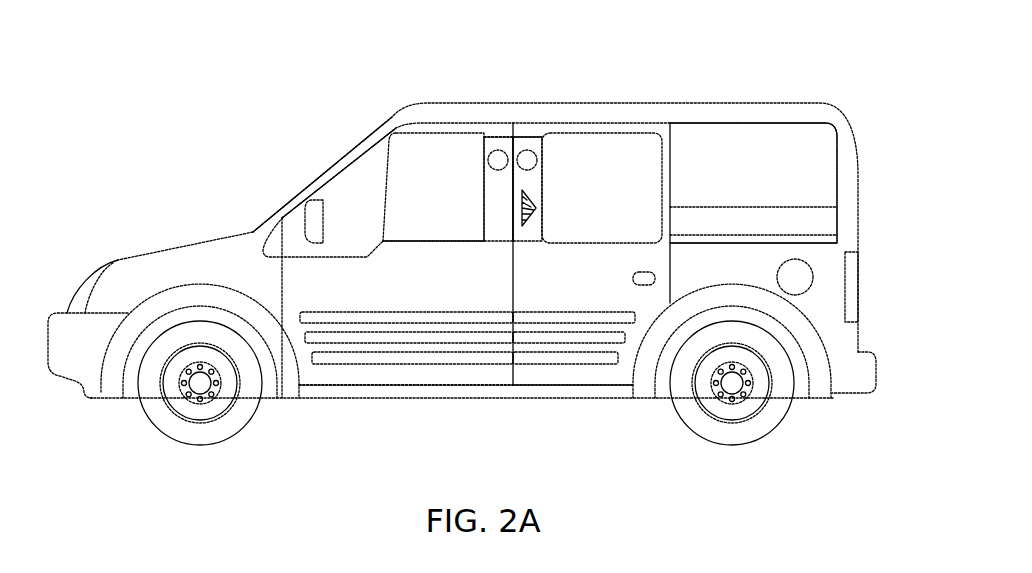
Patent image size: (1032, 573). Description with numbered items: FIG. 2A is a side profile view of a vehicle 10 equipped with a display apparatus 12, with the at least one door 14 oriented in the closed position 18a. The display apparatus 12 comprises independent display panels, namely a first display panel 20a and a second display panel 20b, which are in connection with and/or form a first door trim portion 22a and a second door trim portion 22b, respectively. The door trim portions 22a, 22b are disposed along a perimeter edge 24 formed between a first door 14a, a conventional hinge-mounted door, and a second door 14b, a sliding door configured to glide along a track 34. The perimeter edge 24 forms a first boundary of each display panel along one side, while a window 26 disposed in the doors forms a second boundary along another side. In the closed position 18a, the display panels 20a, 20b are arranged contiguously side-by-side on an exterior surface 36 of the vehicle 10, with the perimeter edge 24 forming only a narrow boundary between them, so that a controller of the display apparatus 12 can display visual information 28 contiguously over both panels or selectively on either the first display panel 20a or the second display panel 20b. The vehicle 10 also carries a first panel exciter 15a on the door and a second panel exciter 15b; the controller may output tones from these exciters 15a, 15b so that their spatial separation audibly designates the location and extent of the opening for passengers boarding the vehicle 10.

The vehicle 10 is at (237, 88).
The display apparatus 12 is at (548, 93).
The door 14 is at (468, 256).
The first door 14a is at (437, 375).
The second door 14b is at (547, 375).
The first panel exciter 15a is at (496, 148).
The second panel exciter 15b is at (527, 148).
The closed position 18a is at (647, 43).
The first display panel 20a is at (487, 218).
The second display panel 20b is at (540, 215).
The first door trim portion 22a is at (480, 156).
The second door trim portion 22b is at (546, 156).
The perimeter edge 24 is at (514, 222).
The window 26 is at (522, 188).
The visual information 28 is at (520, 136).
The track 34 is at (740, 240).
The exterior surface 36 is at (352, 202).